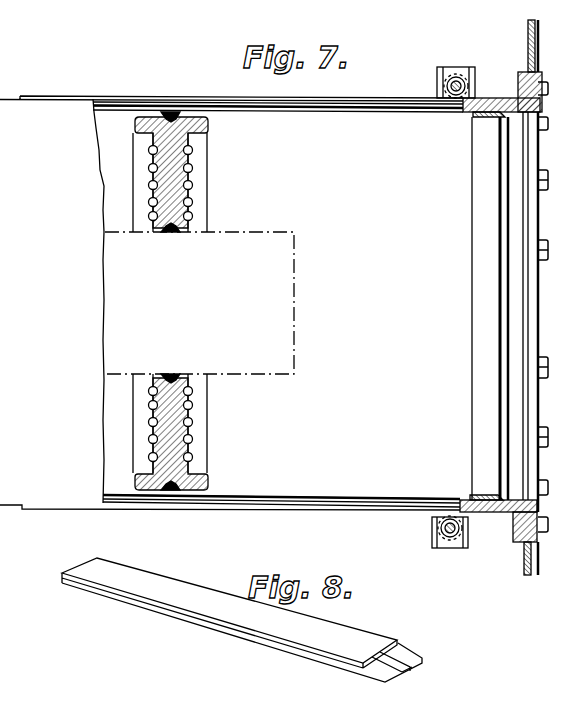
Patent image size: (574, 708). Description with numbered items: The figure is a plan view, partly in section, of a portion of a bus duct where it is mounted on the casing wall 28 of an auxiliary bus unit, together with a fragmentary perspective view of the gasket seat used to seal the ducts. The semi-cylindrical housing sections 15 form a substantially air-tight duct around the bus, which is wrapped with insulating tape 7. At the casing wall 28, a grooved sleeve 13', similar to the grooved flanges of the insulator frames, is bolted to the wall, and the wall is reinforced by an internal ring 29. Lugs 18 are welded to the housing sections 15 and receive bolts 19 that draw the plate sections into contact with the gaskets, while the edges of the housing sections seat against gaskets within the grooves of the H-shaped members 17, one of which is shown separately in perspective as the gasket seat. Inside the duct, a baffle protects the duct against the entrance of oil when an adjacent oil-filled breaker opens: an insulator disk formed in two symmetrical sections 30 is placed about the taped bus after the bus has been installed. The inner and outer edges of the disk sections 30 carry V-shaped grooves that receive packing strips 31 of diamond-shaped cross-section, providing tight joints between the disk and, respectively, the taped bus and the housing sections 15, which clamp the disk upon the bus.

In FIG. 7, the insulating tape 7 is at (261, 378).
In FIG. 7, the grooved sleeve 13' is at (490, 305).
In FIG. 7, the housing sections 15 is at (40, 107).
In FIG. 7, the H-shaped members 17 is at (371, 99).
In FIG. 8, the H-shaped members 17 is at (194, 588).
In FIG. 7, the lugs 18 is at (437, 72).
In FIG. 7, the bolts 19 is at (449, 85).
In FIG. 7, the casing wall 28 is at (528, 44).
In FIG. 7, the internal ring 29 is at (532, 212).
In FIG. 7, the insulator disk sections 30 is at (190, 177).
In FIG. 7, the packing strips 31 is at (172, 112).